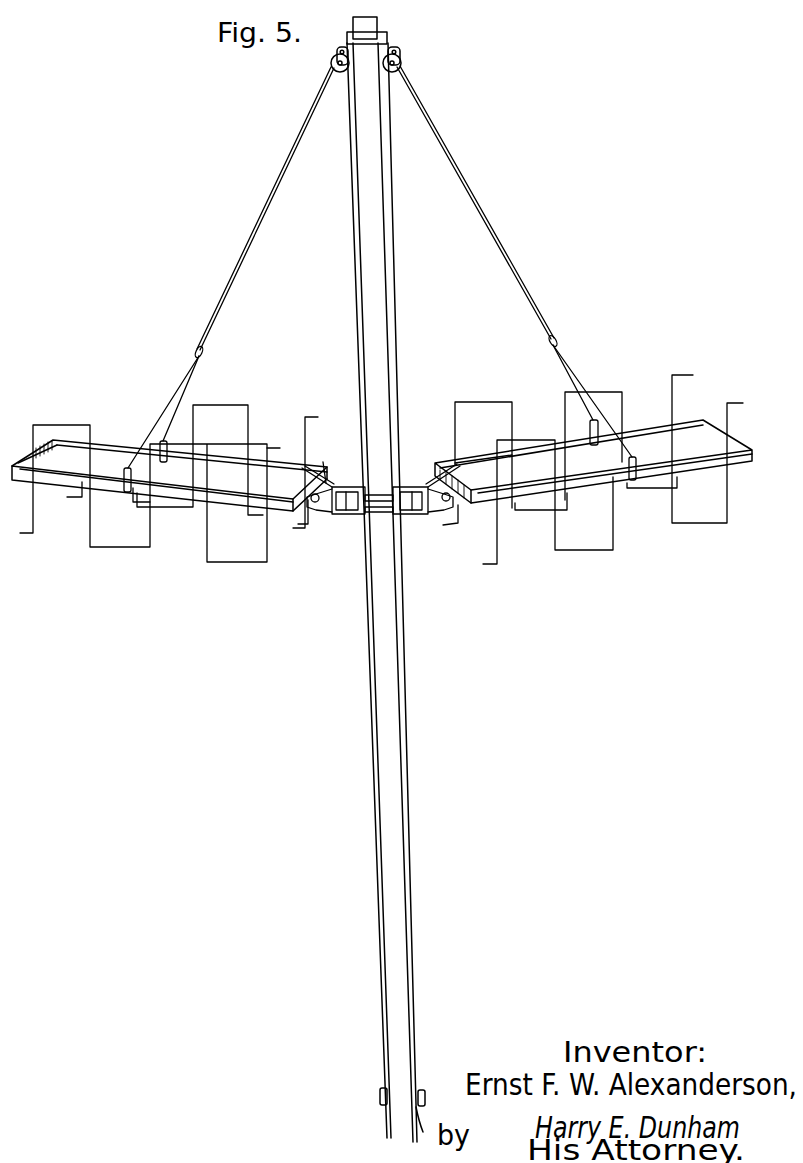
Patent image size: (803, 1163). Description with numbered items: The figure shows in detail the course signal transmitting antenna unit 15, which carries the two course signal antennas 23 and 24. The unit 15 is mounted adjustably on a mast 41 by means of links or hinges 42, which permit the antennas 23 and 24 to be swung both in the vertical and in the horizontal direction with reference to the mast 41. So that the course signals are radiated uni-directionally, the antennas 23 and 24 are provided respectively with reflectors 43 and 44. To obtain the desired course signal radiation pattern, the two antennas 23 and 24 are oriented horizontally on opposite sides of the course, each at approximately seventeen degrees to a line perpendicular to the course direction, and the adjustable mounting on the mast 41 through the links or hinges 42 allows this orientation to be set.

The unit 15 is at (469, 368).
The antenna 23 is at (169, 489).
The antenna 24 is at (593, 469).
The mast 41 is at (378, 579).
The links or hinges 42 is at (347, 513).
The reflector 43 is at (229, 279).
The reflector 44 is at (516, 273).